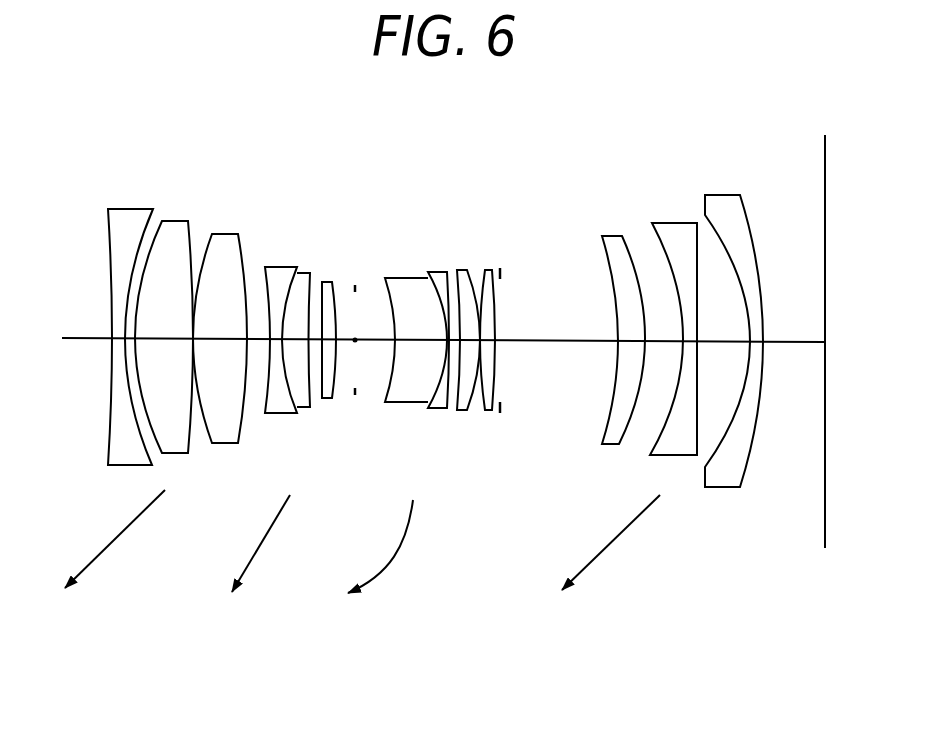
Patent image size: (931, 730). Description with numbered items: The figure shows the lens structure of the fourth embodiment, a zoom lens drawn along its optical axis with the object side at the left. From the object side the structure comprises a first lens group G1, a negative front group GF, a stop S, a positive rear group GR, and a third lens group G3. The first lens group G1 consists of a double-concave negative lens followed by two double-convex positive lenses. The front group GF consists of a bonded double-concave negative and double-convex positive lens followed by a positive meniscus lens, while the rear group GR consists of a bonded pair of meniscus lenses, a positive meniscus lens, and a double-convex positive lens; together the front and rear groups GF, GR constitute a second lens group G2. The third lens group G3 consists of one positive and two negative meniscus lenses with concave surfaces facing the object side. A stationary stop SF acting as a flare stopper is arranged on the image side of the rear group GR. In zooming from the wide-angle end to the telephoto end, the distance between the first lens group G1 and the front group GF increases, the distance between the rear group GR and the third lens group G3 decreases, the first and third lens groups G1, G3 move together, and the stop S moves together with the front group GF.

The first lens group G1 is at (247, 201).
The second lens group G2 is at (473, 140).
The negative front group GF is at (333, 252).
The stop S is at (354, 284).
The positive rear group GR is at (502, 252).
The stationary stop SF is at (500, 270).
The third lens group G3 is at (745, 183).